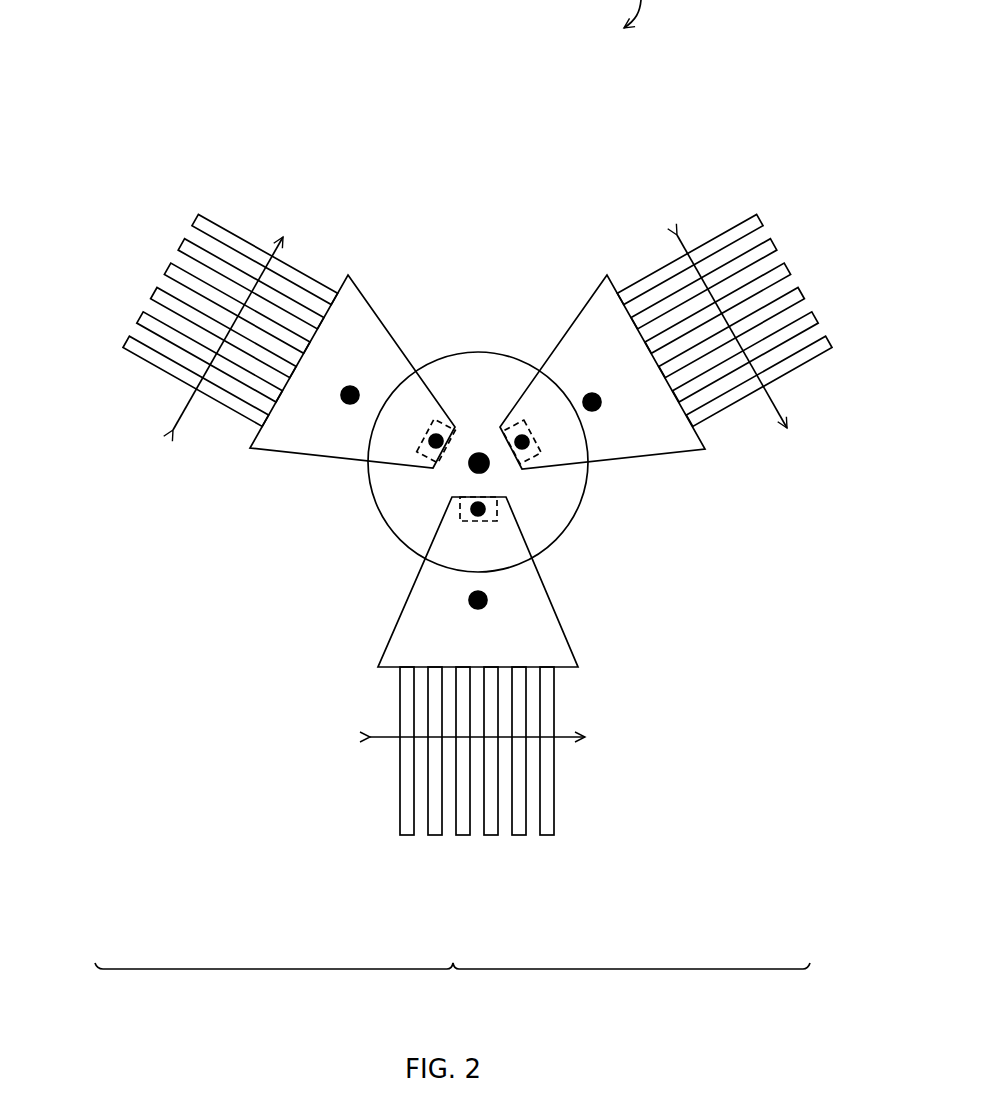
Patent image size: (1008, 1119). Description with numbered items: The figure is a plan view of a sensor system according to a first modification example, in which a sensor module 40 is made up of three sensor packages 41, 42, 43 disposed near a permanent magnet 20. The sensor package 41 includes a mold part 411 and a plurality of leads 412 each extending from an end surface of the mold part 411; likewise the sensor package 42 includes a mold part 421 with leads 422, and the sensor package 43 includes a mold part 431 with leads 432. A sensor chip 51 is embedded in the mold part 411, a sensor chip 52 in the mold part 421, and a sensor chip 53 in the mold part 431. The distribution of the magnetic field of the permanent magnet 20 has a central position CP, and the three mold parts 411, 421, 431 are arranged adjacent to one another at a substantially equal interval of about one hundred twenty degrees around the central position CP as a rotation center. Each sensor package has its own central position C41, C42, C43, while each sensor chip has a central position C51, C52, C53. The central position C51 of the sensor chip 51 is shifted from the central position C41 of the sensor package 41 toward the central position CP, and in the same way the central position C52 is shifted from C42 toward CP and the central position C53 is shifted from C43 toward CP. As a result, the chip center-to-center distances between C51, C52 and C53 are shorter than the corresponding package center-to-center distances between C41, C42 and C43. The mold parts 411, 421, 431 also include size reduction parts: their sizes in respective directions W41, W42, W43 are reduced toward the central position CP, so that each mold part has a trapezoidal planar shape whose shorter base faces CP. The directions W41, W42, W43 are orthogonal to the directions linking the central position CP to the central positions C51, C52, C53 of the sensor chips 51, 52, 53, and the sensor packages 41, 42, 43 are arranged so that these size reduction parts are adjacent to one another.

The permanent magnet 20 is at (480, 352).
The sensor module 40 is at (452, 986).
The sensor package 41 is at (260, 511).
The mold part 411 is at (272, 433).
The leads 412 is at (150, 357).
The sensor package 42 is at (678, 511).
The mold part 421 is at (608, 303).
The leads 422 is at (736, 236).
The sensor package 43 is at (494, 717).
The mold part 431 is at (553, 655).
The leads 432 is at (547, 801).
The direction W41 is at (263, 275).
The direction W42 is at (727, 317).
The direction W43 is at (423, 737).
The central position of the sensor package C41 is at (349, 390).
The central position of the sensor package C42 is at (591, 400).
The central position of the sensor package C43 is at (483, 599).
The central position of the distribution of the magnetic field CP is at (487, 467).
The sensor chip 51 is at (420, 458).
The sensor chip 52 is at (509, 438).
The sensor chip 53 is at (495, 515).
The central position of the sensor chip C51 is at (432, 435).
The central position of the sensor chip C52 is at (528, 445).
The central position of the sensor chip C53 is at (476, 511).